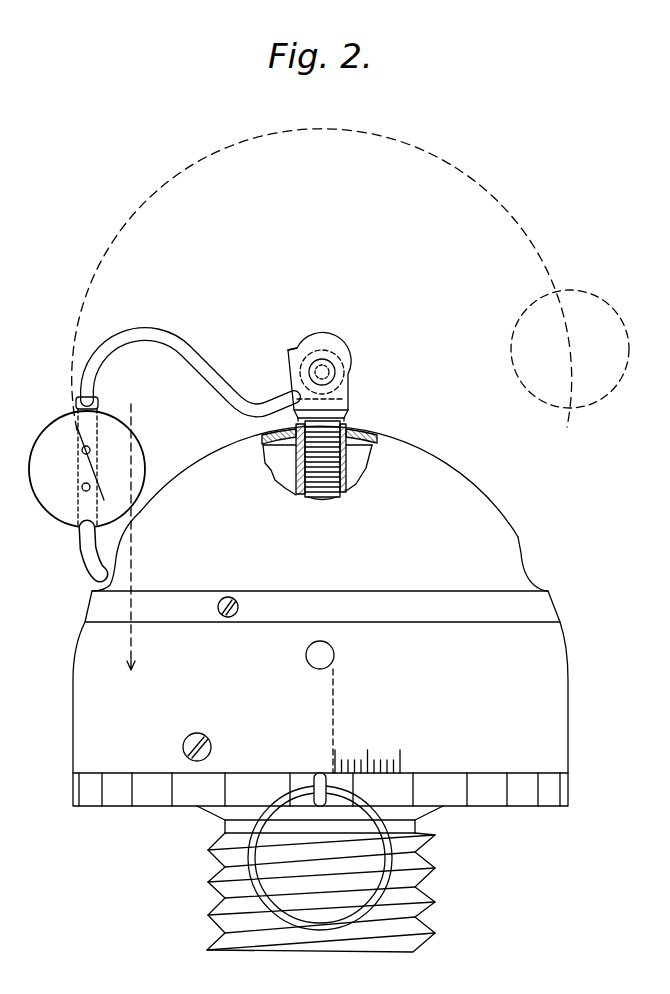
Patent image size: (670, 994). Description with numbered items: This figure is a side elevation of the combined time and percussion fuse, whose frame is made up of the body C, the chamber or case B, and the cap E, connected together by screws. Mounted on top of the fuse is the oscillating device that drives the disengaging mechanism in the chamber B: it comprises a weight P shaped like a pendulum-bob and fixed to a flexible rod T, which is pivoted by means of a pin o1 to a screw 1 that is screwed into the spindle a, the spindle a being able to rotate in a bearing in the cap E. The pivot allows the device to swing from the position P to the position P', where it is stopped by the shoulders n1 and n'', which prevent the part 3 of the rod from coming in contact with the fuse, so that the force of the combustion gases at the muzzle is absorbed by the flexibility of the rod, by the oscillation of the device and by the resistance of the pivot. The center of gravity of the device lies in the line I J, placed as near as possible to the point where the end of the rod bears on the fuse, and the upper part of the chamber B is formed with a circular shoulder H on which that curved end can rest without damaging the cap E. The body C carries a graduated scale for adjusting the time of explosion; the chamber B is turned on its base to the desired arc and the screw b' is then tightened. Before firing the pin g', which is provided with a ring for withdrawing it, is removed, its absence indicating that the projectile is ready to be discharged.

The weight P is at (87, 491).
The oscillated position of weight P' is at (570, 349).
The flexible rod T is at (185, 355).
The part of the rod 3 is at (149, 331).
The shoulder n'' is at (307, 335).
The shoulder n1 is at (343, 371).
The pin o1 is at (326, 368).
The screw 1 is at (342, 395).
The spindle a is at (345, 481).
The line of center of gravity I is at (137, 527).
The line of center of gravity J is at (136, 666).
The cap E is at (305, 508).
The circular shoulder H is at (518, 572).
The chamber B is at (320, 698).
The screw b' is at (197, 735).
The pin g' is at (320, 837).
The body C is at (322, 879).